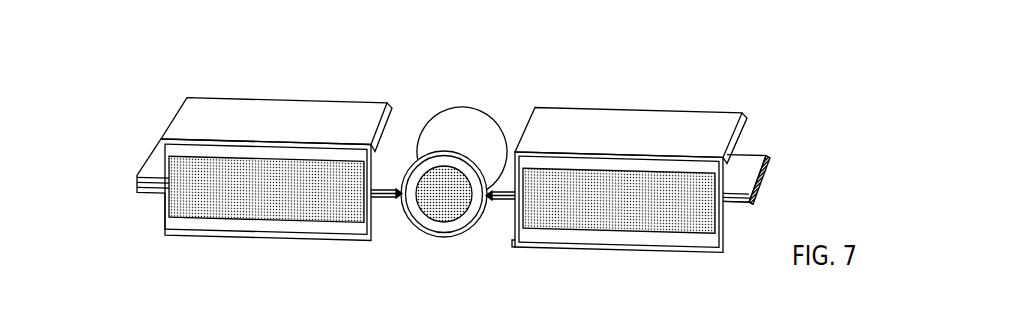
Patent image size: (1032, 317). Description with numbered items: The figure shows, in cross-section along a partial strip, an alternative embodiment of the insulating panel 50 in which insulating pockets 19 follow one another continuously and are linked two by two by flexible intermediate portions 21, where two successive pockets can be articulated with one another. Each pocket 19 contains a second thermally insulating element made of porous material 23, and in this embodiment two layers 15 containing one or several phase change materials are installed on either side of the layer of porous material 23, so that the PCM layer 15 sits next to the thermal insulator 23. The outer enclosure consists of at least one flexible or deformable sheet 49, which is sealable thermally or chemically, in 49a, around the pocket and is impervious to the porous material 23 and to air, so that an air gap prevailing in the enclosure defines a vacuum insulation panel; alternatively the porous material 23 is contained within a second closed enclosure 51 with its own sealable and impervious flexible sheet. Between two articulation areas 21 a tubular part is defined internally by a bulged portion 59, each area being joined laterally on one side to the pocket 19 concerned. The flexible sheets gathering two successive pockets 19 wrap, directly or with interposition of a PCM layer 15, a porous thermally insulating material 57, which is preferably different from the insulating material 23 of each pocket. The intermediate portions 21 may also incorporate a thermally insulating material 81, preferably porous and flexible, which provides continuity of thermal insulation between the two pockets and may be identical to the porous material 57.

The first layer containing a PCM 15 is at (325, 151).
The insulating pocket 19 is at (276, 120).
The flexible intermediate portion 21 is at (398, 158).
The porous material 23 is at (662, 228).
The flexible sheet 49 is at (750, 165).
The sealing of the flexible sheet 49a is at (140, 170).
The panel 50 is at (790, 79).
The second closed enclosure 51 is at (190, 153).
The porous thermally insulating material 57 is at (453, 217).
The bulged portion 59 is at (428, 238).
The thermally insulating material 81 is at (447, 163).